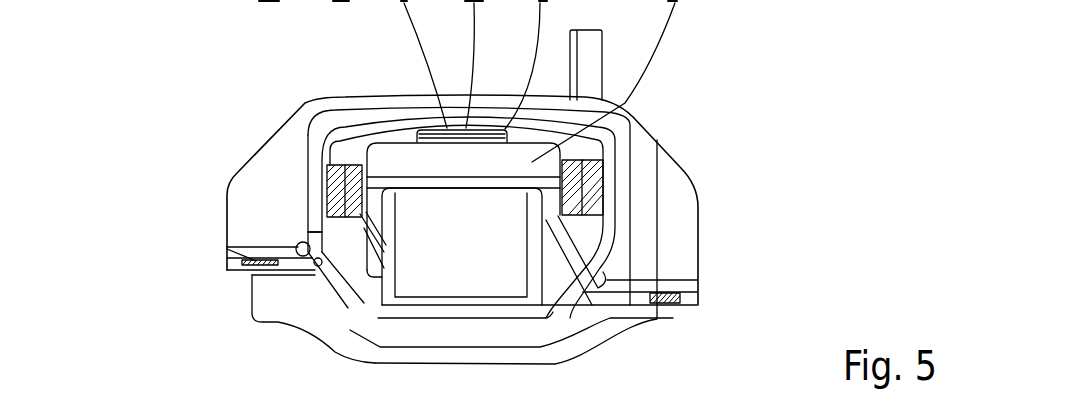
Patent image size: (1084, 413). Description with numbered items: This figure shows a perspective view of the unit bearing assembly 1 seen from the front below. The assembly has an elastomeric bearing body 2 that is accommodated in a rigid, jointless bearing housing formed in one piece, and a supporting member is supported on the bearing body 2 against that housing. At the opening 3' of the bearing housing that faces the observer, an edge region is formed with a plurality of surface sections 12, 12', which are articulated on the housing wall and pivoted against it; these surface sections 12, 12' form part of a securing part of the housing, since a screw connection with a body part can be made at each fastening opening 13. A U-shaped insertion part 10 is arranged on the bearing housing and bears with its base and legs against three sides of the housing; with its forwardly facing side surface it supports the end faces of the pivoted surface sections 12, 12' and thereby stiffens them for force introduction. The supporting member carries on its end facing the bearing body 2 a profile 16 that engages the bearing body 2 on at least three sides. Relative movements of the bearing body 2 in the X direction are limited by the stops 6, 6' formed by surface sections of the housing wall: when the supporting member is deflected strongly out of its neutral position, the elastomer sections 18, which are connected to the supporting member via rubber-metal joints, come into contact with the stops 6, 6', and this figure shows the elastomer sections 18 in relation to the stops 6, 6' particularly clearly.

The unit bearing assembly 1 is at (705, 237).
The elastomeric bearing body 2 is at (470, 240).
The opening 3' is at (585, 341).
The stop 6 is at (238, 145).
The stop 6' is at (688, 145).
The U-shaped insertion part 10 is at (295, 298).
The surface section 12 is at (190, 277).
The surface section 12' is at (708, 291).
The fastening opening 13 is at (230, 246).
The profile 16 is at (326, 110).
The elastomer section 18 is at (318, 213).